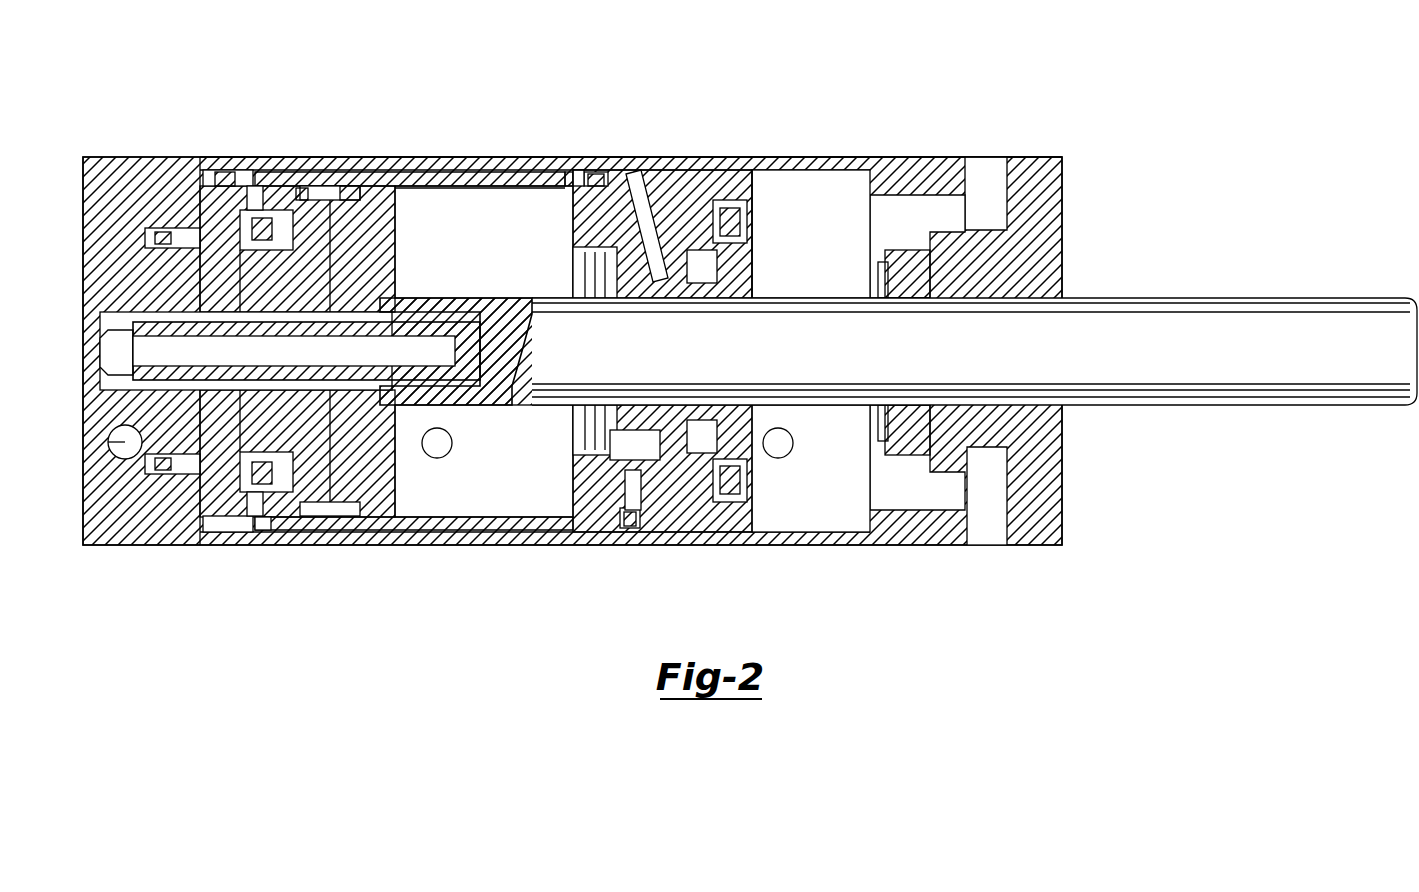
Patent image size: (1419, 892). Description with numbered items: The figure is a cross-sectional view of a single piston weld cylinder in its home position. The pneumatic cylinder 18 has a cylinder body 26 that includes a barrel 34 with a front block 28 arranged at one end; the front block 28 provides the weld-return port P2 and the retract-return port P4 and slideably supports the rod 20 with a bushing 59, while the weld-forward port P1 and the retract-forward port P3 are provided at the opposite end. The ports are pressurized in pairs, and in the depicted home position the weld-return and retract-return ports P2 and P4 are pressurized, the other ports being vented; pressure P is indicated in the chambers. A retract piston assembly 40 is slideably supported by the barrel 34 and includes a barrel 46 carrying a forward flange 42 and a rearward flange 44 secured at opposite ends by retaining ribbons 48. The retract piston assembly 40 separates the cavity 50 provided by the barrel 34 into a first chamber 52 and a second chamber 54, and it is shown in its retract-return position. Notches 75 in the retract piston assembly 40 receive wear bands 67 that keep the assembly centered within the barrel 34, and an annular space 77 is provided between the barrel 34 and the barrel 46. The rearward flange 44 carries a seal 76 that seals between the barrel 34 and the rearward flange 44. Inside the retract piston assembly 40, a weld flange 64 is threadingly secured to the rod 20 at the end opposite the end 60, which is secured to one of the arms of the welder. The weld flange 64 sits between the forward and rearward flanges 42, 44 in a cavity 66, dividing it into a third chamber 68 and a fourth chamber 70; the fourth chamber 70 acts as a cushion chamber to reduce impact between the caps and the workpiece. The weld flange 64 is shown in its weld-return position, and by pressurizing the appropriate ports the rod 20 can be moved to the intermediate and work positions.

The pneumatic cylinder 18 is at (388, 150).
The rod 20 is at (798, 354).
The cylinder body 26 is at (405, 150).
The front block 28 is at (1040, 183).
The barrel 34 is at (430, 162).
The retract piston assembly 40 is at (466, 168).
The forward flange 42 is at (197, 157).
The rearward flange 44 is at (690, 497).
The barrel 46 is at (498, 172).
The retaining ribbons 48 is at (300, 186).
The cavity 50 is at (773, 157).
The first chamber 52 is at (148, 230).
The second chamber 54 is at (806, 227).
The bushing 59 is at (990, 406).
The end of rod 60 is at (1392, 302).
The weld flange 64 is at (292, 186).
The cavity 66 is at (484, 202).
The wear bands 67 is at (582, 168).
The third chamber 68 is at (258, 412).
The fourth chamber 70 is at (468, 257).
The notches 75 is at (236, 157).
The seal 76 is at (662, 157).
The annular space 77 is at (350, 165).
The weld-forward port P1 is at (113, 326).
The weld-return port P2 is at (990, 547).
The retract-forward port P3 is at (100, 445).
The retract-return port P4 is at (985, 157).
The pressure chamber marker P is at (607, 443).